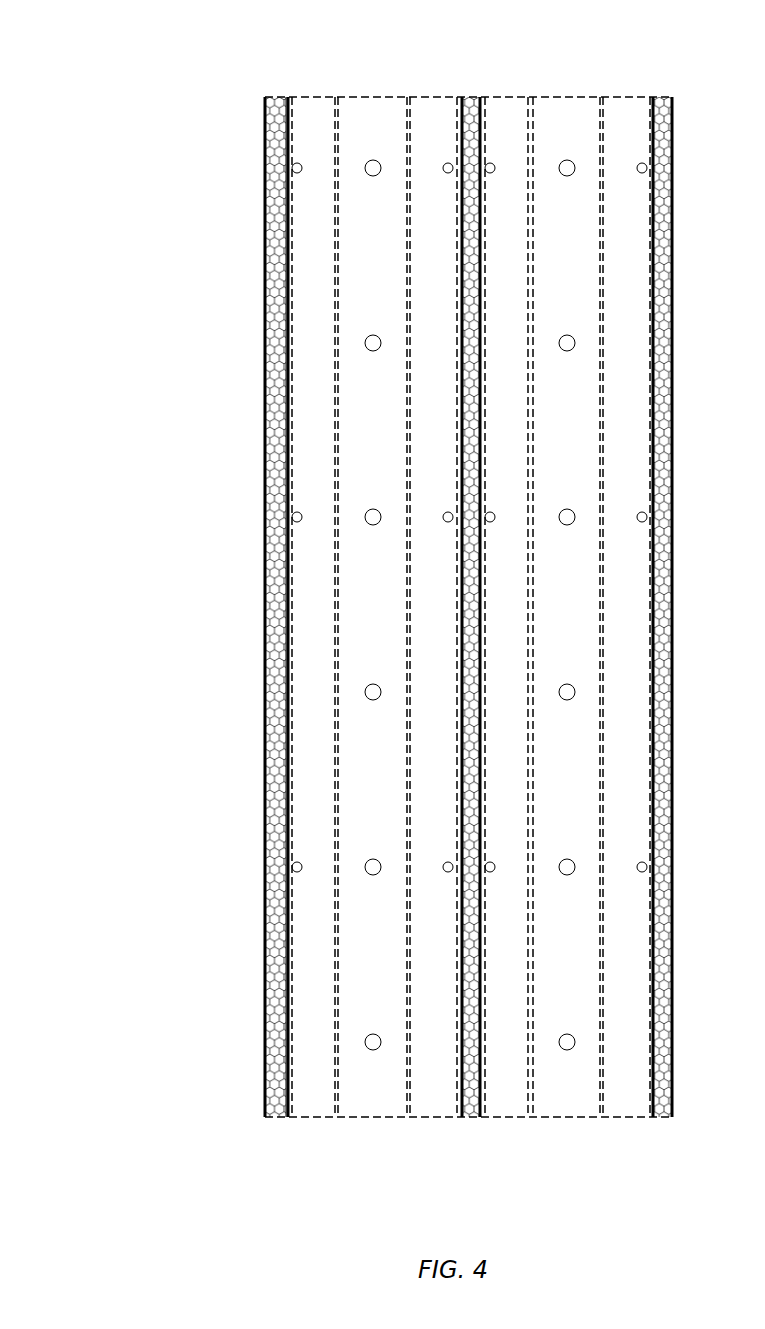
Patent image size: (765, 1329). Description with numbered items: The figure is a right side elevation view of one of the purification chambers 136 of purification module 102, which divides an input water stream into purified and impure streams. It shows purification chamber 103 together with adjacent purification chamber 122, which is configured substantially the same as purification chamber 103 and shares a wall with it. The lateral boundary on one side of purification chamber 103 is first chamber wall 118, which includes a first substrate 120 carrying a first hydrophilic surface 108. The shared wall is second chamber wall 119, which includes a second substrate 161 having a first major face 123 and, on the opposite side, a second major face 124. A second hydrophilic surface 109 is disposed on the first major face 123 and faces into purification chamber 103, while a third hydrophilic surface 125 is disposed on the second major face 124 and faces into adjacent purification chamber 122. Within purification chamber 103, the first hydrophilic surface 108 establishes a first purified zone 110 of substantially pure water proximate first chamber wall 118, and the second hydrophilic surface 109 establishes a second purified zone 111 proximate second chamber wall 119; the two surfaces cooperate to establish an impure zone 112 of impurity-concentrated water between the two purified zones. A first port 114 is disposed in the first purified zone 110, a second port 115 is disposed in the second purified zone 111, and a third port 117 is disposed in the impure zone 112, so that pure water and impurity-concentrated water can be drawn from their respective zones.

The purification module 102 is at (80, 88).
The purification chamber 103 is at (360, 76).
The first hydrophilic surface 108 is at (290, 241).
The second hydrophilic surface 109 is at (456, 241).
The first purified zone 110 is at (309, 112).
The second purified zone 111 is at (439, 112).
The impure zone 112 is at (387, 112).
The first port 114 is at (312, 152).
The second port 115 is at (446, 165).
The third port 117 is at (372, 162).
The first chamber wall 118 is at (278, 100).
The second chamber wall 119 is at (467, 100).
The first substrate 120 is at (280, 151).
The adjacent purification chamber 122 is at (587, 76).
The first major face 123 is at (460, 321).
The second major face 124 is at (482, 321).
The third hydrophilic surface 125 is at (482, 392).
The purification chambers 136 is at (225, 110).
The second substrate 161 is at (480, 128).